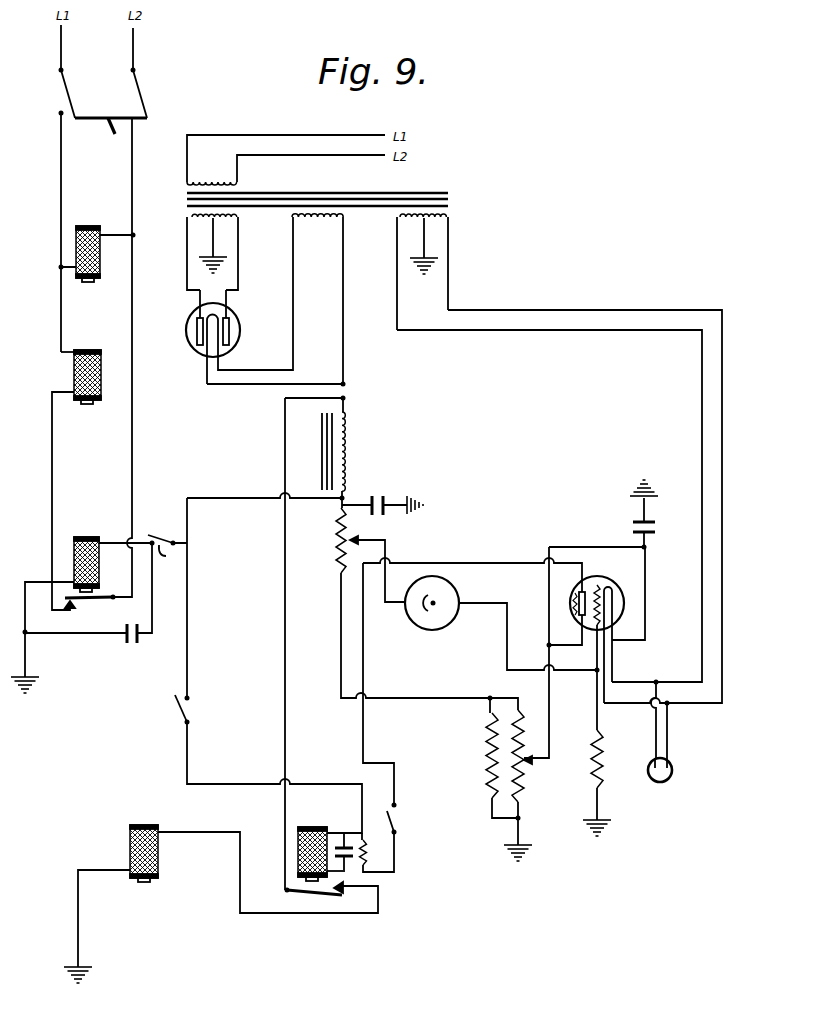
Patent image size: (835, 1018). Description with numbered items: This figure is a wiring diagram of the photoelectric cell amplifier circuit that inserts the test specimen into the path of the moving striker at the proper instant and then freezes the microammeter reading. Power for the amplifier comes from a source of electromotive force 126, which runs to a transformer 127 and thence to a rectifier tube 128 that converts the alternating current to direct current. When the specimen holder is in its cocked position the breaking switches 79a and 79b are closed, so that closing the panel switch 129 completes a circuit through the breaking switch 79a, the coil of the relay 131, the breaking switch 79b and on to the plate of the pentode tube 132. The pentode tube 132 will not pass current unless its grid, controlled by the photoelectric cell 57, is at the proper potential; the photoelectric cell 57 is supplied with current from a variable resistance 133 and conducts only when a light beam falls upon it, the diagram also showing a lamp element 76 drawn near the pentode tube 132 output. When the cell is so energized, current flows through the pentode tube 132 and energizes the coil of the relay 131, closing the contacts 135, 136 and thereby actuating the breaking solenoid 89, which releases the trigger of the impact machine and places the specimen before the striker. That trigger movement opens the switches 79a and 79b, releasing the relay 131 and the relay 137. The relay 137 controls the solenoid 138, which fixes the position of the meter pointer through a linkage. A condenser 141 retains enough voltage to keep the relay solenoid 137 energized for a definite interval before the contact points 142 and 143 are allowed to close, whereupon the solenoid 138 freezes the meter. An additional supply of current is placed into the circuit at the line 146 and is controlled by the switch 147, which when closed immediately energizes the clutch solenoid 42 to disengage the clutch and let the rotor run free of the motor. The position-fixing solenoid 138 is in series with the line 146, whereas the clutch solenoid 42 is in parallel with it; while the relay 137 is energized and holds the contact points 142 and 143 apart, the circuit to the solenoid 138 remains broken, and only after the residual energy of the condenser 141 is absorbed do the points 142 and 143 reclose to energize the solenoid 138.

The line 146 is at (112, 43).
The switch 147 is at (125, 95).
The clutch solenoid 42 is at (88, 226).
The solenoid 138 is at (88, 350).
The relay 137 is at (86, 537).
The contact point 142 is at (82, 602).
The contact point 143 is at (85, 617).
The condenser 141 is at (123, 642).
The breaking switch 79a is at (168, 550).
The panel switch 129 is at (177, 712).
The variable resistance 133 is at (337, 547).
The photoelectric cell 57 is at (440, 577).
The rectifier tube 128 is at (188, 345).
The source of electromotive force 126 is at (410, 139).
The transformer 127 is at (455, 205).
The pentode tube 132 is at (623, 593).
The lamp 76 is at (663, 783).
The relay 131 is at (310, 827).
The breaking switch 79b is at (397, 812).
The contact 135 is at (328, 897).
The contact 136 is at (365, 913).
The breaking solenoid 89 is at (130, 837).